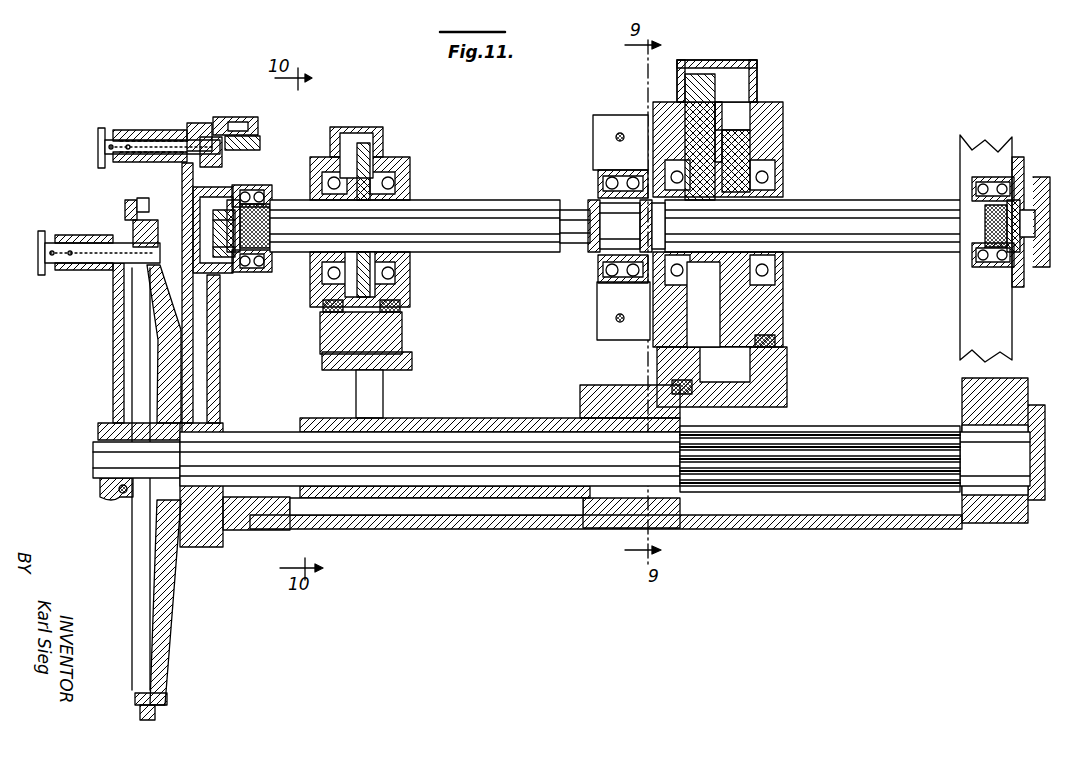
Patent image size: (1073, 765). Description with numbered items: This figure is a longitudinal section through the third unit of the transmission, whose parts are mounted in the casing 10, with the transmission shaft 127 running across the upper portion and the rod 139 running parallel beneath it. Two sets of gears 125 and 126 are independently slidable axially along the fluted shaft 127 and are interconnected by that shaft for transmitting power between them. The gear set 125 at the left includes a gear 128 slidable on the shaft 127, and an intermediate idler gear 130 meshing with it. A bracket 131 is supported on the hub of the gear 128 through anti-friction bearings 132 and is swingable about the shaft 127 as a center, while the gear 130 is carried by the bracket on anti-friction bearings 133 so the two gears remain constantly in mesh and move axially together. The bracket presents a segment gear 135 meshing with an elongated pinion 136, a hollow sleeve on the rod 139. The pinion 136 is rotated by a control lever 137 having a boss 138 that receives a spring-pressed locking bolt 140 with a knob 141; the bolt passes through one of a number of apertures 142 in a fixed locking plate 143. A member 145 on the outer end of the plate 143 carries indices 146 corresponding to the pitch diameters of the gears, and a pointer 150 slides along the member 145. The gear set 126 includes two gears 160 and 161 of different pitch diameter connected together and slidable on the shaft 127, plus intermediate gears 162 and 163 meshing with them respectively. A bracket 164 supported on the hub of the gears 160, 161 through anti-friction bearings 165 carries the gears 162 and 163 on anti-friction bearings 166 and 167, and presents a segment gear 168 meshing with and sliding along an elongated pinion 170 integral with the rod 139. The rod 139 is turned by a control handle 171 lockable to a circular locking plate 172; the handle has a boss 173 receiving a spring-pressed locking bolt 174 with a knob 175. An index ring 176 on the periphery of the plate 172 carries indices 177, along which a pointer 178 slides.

The casing 10 is at (978, 391).
The gear set 125 is at (362, 297).
The gear set 126 is at (732, 142).
The transmission shaft 127 is at (893, 208).
The gear 128 is at (370, 146).
The intermediate idler gear 130 is at (405, 335).
The bracket 131 is at (412, 363).
The anti-friction bearings 132 is at (410, 180).
The anti-friction bearings 133 is at (400, 310).
The segment gear 135 is at (383, 413).
The elongated pinion 136 is at (505, 420).
The control lever 137 is at (182, 311).
The boss 138 is at (140, 128).
The rod 139 is at (428, 470).
The spring-pressed locking bolt 140 is at (116, 160).
The knob 141 is at (98, 137).
The apertures 142 is at (223, 165).
The fixed locking plate 143 is at (220, 322).
The member 145 is at (240, 146).
The indices 146 is at (208, 122).
The pointer 150 is at (235, 118).
The gear 160 is at (703, 265).
The gear 161 is at (733, 153).
The intermediate gear 162 is at (700, 78).
The intermediate gear 163 is at (800, 362).
The bracket 164 is at (785, 112).
The anti-friction bearings 165 is at (766, 178).
The anti-friction bearings 166 is at (665, 155).
The anti-friction bearings 167 is at (787, 334).
The segment gear 168 is at (690, 385).
The elongated pinion 170 is at (852, 430).
The control handle 171 is at (113, 367).
The circular locking plate 172 is at (172, 594).
The boss 173 is at (65, 268).
The spring-pressed locking bolt 174 is at (105, 263).
The knob 175 is at (38, 260).
The index ring 176 is at (133, 231).
The indices 177 is at (125, 208).
The pointer 178 is at (133, 200).